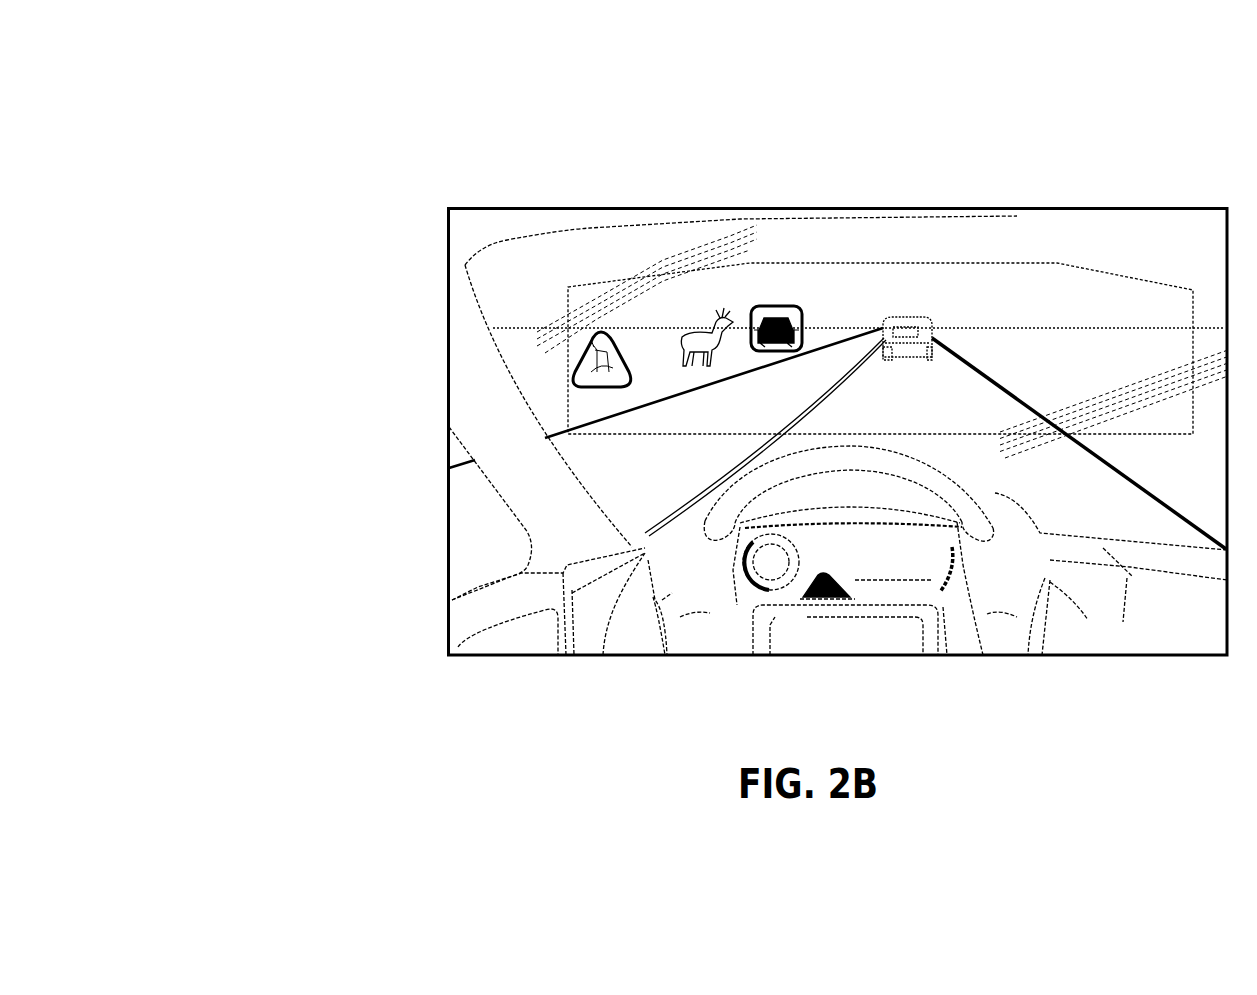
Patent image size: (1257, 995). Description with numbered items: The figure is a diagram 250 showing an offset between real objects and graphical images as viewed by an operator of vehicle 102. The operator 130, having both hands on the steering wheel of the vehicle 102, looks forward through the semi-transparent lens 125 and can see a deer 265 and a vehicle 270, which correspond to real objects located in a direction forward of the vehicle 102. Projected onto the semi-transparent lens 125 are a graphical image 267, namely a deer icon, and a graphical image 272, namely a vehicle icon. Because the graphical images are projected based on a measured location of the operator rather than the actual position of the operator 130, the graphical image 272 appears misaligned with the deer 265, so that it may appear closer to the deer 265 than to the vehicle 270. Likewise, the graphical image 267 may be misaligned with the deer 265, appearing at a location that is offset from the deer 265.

The diagram 250 is at (355, 70).
The semi-transparent lens 125 is at (845, 262).
The graphical image 267 is at (600, 328).
The deer 265 is at (742, 300).
The graphical image 272 is at (862, 301).
The vehicle 270 is at (979, 301).
The operator 130 is at (717, 595).
The vehicle 102 is at (1210, 647).